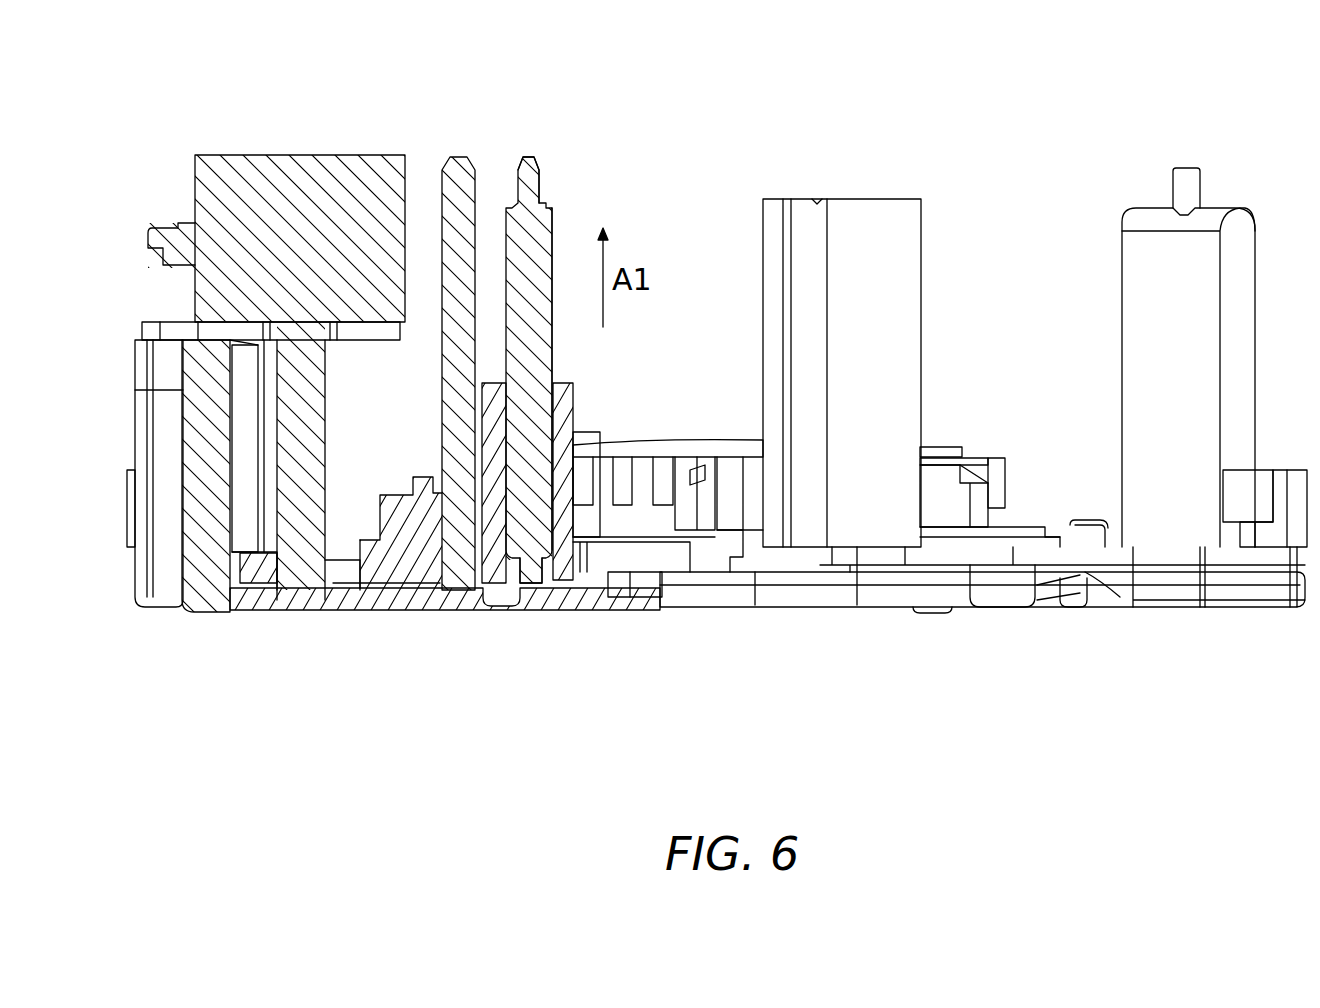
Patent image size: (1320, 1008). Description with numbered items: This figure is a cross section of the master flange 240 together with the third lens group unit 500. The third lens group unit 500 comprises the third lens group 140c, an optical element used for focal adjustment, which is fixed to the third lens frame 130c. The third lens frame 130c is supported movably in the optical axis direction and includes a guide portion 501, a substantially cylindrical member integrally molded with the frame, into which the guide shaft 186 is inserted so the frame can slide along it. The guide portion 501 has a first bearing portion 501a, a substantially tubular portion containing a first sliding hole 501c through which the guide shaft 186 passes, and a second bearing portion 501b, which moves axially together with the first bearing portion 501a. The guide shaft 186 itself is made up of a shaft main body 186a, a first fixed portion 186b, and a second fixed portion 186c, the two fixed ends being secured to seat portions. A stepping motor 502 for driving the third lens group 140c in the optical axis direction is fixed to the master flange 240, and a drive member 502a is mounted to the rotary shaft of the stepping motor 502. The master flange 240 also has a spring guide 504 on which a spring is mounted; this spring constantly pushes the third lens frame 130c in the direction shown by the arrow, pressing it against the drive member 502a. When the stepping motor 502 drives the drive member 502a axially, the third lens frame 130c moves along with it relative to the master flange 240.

The stepping motor 502 is at (245, 168).
The drive member 502a is at (243, 588).
The spring guide 504 is at (460, 190).
The guide shaft 186 is at (548, 203).
The shaft main body 186a is at (542, 260).
The first fixed portion 186b is at (528, 608).
The second fixed portion 186c is at (531, 170).
The guide portion 501 is at (487, 593).
The first bearing portion 501a is at (562, 407).
The second bearing portion 501b is at (565, 548).
The first sliding hole 501c is at (422, 592).
The third lens group unit 500 is at (955, 92).
The third lens group 140c is at (722, 445).
The third lens frame 130c is at (938, 477).
The master flange 240 is at (815, 607).